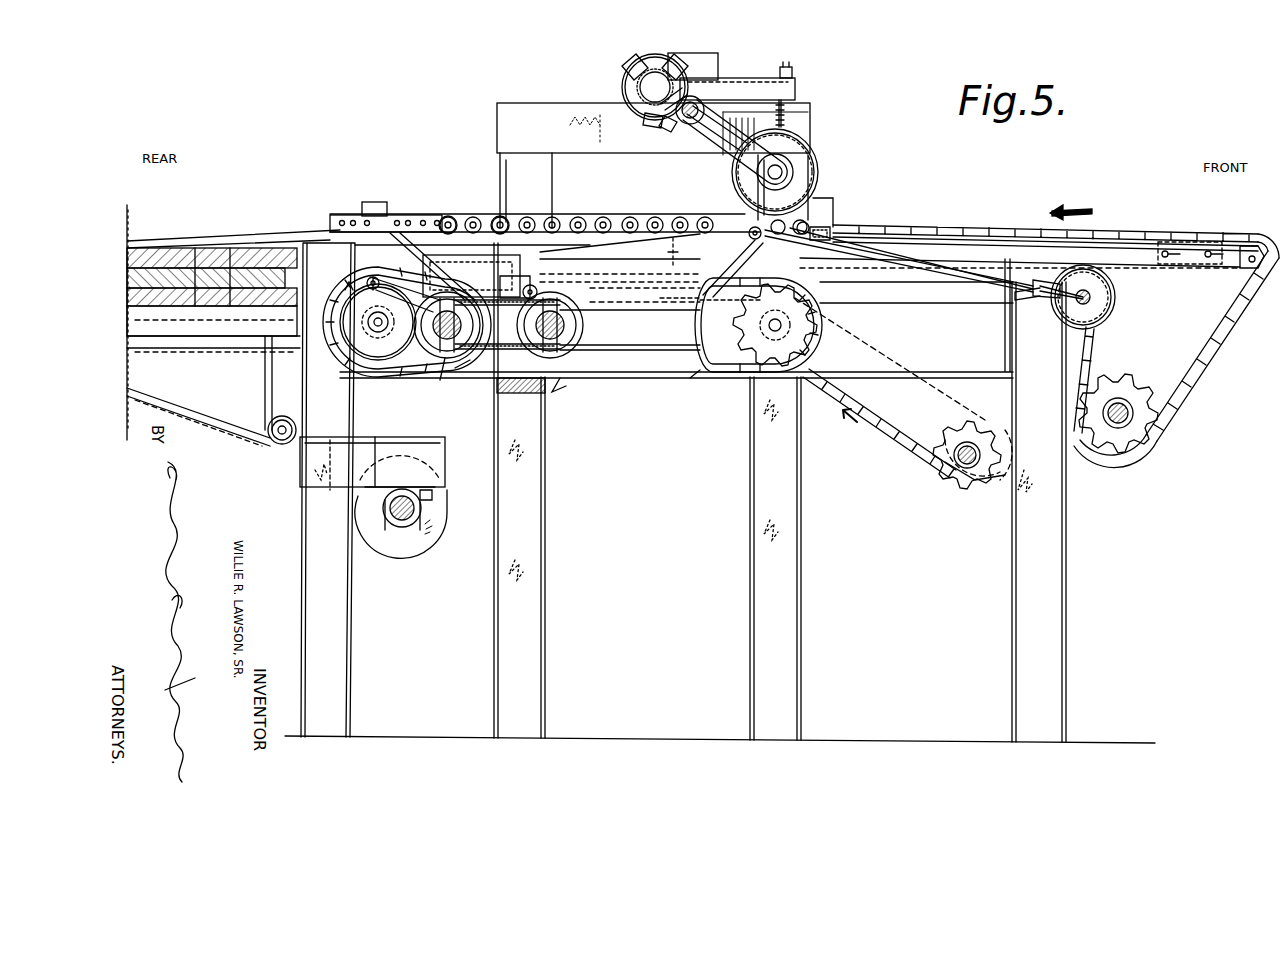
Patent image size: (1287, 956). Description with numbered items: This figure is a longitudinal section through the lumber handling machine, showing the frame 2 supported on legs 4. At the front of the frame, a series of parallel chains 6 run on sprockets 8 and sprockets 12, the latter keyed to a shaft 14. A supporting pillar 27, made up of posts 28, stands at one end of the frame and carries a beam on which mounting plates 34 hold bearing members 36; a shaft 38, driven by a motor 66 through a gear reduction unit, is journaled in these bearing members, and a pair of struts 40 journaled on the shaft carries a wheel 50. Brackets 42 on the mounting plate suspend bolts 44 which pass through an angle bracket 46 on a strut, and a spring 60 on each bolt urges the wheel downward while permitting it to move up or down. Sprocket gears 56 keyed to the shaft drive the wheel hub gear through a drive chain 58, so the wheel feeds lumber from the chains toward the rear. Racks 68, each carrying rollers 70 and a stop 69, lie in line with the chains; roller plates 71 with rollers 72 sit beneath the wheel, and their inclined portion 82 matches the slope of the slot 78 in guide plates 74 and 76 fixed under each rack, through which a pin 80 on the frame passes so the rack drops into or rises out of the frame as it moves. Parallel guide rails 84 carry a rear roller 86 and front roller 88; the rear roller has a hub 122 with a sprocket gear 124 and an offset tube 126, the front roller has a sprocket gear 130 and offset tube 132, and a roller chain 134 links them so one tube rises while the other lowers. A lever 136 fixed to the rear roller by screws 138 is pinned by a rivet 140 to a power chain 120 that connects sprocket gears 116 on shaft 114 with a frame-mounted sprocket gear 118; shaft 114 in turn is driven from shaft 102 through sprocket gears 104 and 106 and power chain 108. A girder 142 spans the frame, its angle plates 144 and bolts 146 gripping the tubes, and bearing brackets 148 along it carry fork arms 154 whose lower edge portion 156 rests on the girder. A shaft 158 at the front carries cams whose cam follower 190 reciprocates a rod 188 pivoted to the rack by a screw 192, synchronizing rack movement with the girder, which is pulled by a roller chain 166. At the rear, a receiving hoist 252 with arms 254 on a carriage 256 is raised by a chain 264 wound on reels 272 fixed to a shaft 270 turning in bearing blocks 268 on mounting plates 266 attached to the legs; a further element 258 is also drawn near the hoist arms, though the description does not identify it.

The frame 2 is at (1117, 246).
The legs 4 is at (1025, 600).
The chains 6 is at (1180, 398).
The sprocket 8 is at (1260, 240).
The sprockets 12 is at (1130, 385).
The shaft 14 is at (1116, 428).
The supporting pillar 27 is at (540, 118).
The posts 28 is at (760, 534).
The mounting plates 34 is at (700, 80).
The bearing members 36 is at (664, 122).
The shaft 38 is at (636, 62).
The struts 40 is at (738, 135).
The brackets 42 is at (745, 82).
The bolts 44 is at (794, 72).
The angle bracket 46 is at (768, 178).
The wheel 50 is at (818, 172).
The sprocket gears 56 is at (686, 122).
The drive chain 58 is at (672, 120).
The spring 60 is at (790, 108).
The motor 66 is at (675, 58).
The racks 68 is at (600, 240).
The stop 69 is at (377, 202).
The rollers 70 is at (835, 262).
The roller plates 71 is at (840, 228).
The rollers 72 is at (828, 215).
The guide plate 74 is at (659, 255).
The guide plate 76 is at (490, 218).
The slot 78 is at (675, 218).
The pin 80 is at (425, 222).
The inclined portion 82 is at (745, 228).
The guide rails 84 is at (675, 375).
The roller 86 is at (447, 360).
The roller 88 is at (630, 345).
The shaft 102 is at (960, 485).
The sprocket gear 104 is at (955, 432).
The sprocket gear 106 is at (885, 450).
The power chain 108 is at (842, 410).
The shaft 114 is at (778, 330).
The sprocket gears 116 is at (715, 342).
The sprocket gear 118 is at (300, 310).
The power chain 120 is at (700, 380).
The hub 122 is at (410, 360).
The sprocket gear 124 is at (510, 318).
The tube 126 is at (465, 370).
The sprocket gear 130 is at (520, 352).
The tube 132 is at (582, 322).
The roller chain 134 is at (585, 328).
The lever 136 is at (378, 322).
The screws 138 is at (605, 347).
The rivet 140 is at (340, 265).
The girder 142 is at (521, 391).
The angle plates 144 is at (585, 388).
The bolts 146 is at (565, 285).
The bearing brackets 148 is at (518, 275).
The fork arms 154 is at (293, 225).
The lower edge portion 156 is at (615, 255).
The shaft 158 is at (1090, 300).
The roller chain 166 is at (1115, 300).
The rod 188 is at (960, 252).
The cam follower 190 is at (1065, 318).
The screw 192 is at (731, 276).
The receiving hoist 252 is at (268, 400).
The arms 254 is at (170, 340).
The carriage 256 is at (265, 362).
The roller 258 is at (270, 442).
The chain 264 is at (350, 440).
The mounting plates 266 is at (430, 463).
The bearing block 268 is at (388, 530).
The shaft 270 is at (425, 515).
The reels 272 is at (425, 535).